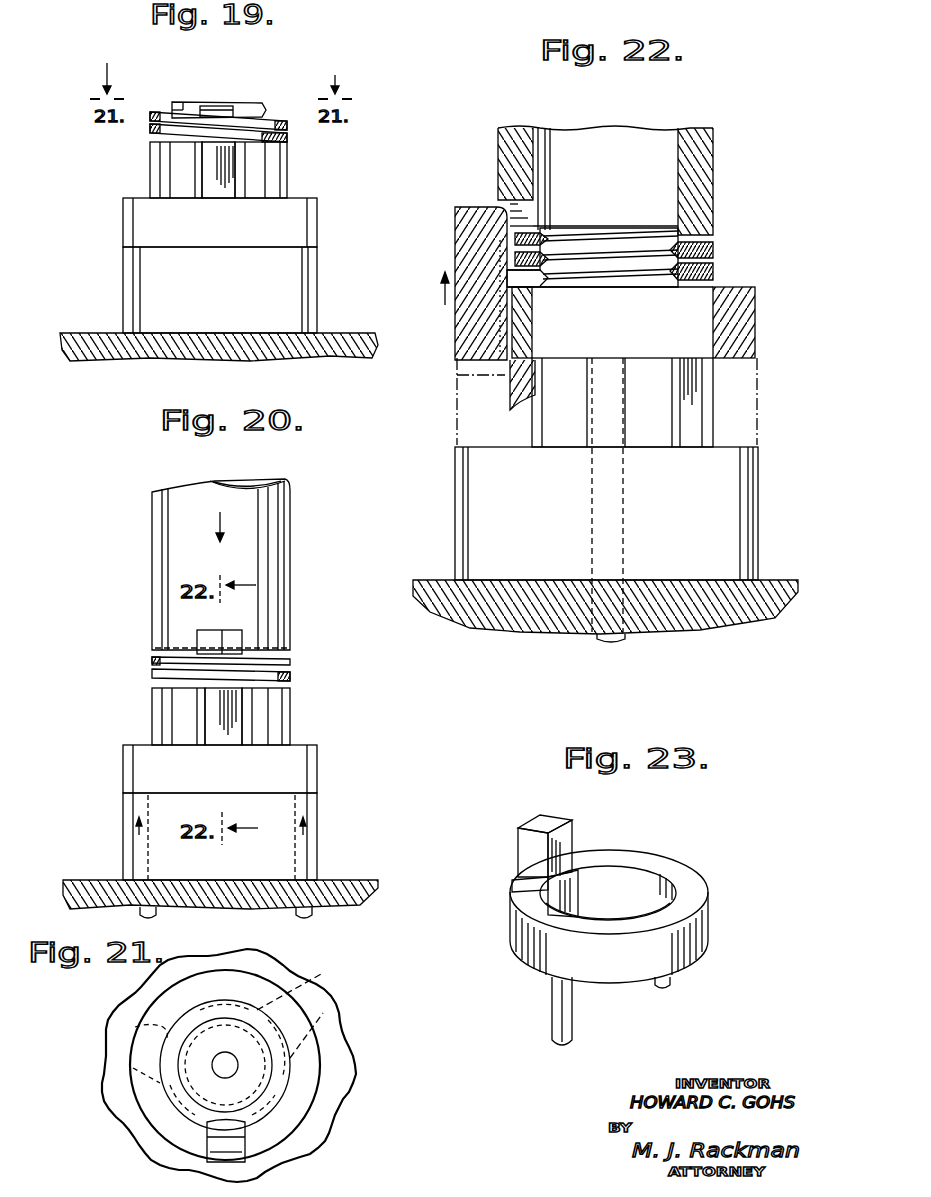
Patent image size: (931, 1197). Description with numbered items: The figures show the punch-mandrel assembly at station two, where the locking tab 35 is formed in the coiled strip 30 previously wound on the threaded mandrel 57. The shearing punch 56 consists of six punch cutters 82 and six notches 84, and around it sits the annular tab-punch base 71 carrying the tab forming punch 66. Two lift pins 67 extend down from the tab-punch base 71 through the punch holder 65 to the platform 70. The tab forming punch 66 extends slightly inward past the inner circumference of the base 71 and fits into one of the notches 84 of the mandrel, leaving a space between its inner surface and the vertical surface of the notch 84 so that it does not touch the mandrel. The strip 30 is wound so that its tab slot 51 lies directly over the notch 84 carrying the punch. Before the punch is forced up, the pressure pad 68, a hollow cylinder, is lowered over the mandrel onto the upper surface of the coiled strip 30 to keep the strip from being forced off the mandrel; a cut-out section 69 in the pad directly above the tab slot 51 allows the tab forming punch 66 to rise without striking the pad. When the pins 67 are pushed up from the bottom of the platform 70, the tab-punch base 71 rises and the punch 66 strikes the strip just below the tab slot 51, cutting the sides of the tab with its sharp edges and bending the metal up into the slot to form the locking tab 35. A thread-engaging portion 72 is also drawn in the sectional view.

In FIG. 19, the coiled strip 30 is at (152, 128).
In FIG. 20, the coiled strip 30 is at (288, 677).
In FIG. 21, the coiled strip 30 is at (255, 1120).
In FIG. 22, the coiled strip 30 is at (713, 252).
In FIG. 22, the locking tab 35 is at (510, 240).
In FIG. 19, the tab slot 51 is at (222, 84).
In FIG. 20, the tab slot 51 is at (222, 650).
In FIG. 19, the shearing punch 56 is at (287, 167).
In FIG. 20, the shearing punch 56 is at (290, 713).
In FIG. 22, the shearing punch 56 is at (700, 393).
In FIG. 19, the threaded mandrel 57 is at (245, 100).
In FIG. 20, the threaded mandrel 57 is at (285, 626).
In FIG. 21, the threaded mandrel 57 is at (225, 1025).
In FIG. 22, the threaded mandrel 57 is at (590, 233).
In FIG. 19, the punch holder 65 is at (145, 274).
In FIG. 20, the punch holder 65 is at (123, 805).
In FIG. 22, the punch holder 65 is at (462, 477).
In FIG. 19, the tab forming punch 66 is at (220, 188).
In FIG. 20, the tab forming punch 66 is at (220, 728).
In FIG. 21, the tab forming punch 66 is at (207, 1148).
In FIG. 22, the tab forming punch 66 is at (480, 197).
In FIG. 23, the tab forming punch 66 is at (570, 850).
In FIG. 20, the lift pins 67 is at (150, 855).
In FIG. 22, the lift pins 67 is at (600, 641).
In FIG. 23, the lift pins 67 is at (660, 990).
In FIG. 20, the pressure pad 68 is at (152, 510).
In FIG. 22, the pressure pad 68 is at (520, 128).
In FIG. 20, the cut-out section 69 is at (212, 630).
In FIG. 19, the platform 70 is at (103, 312).
In FIG. 20, the platform 70 is at (338, 880).
In FIG. 22, the platform 70 is at (430, 580).
In FIG. 19, the tab-punch base 71 is at (123, 212).
In FIG. 20, the tab-punch base 71 is at (125, 762).
In FIG. 21, the tab-punch base 71 is at (140, 1100).
In FIG. 22, the tab-punch base 71 is at (735, 290).
In FIG. 23, the tab-punch base 71 is at (678, 870).
In FIG. 22, the thread engaging portion 72 is at (527, 232).
In FIG. 21, the punch cutters 82 is at (325, 992).
In FIG. 21, the notches 84 is at (135, 1027).